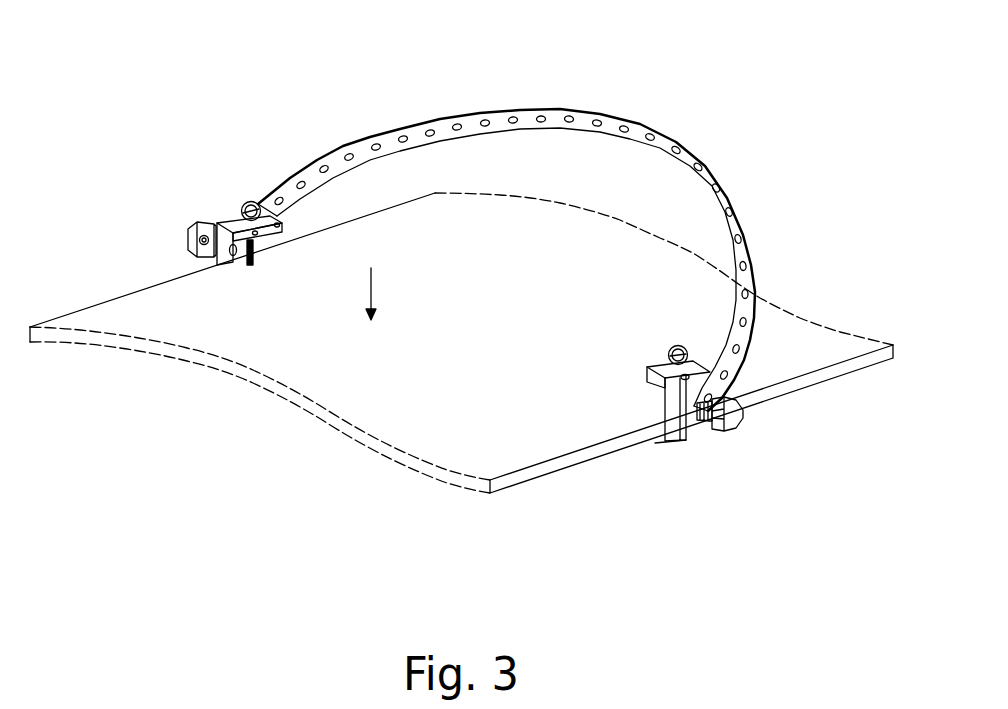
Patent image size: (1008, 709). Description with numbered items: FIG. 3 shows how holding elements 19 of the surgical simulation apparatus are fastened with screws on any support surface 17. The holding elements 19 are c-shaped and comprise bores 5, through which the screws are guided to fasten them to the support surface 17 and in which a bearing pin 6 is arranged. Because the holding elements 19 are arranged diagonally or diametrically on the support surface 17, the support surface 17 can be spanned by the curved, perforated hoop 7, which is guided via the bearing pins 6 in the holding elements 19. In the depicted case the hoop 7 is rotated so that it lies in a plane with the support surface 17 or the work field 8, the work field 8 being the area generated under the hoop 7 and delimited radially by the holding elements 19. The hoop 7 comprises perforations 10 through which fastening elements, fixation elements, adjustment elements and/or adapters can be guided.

The bores 5 is at (233, 256).
The bearing pin 6 is at (710, 429).
The hoop 7 is at (455, 122).
The work field 8 is at (371, 279).
The perforations 10 is at (385, 128).
The support surface 17 is at (473, 316).
The holding elements 19 is at (218, 222).